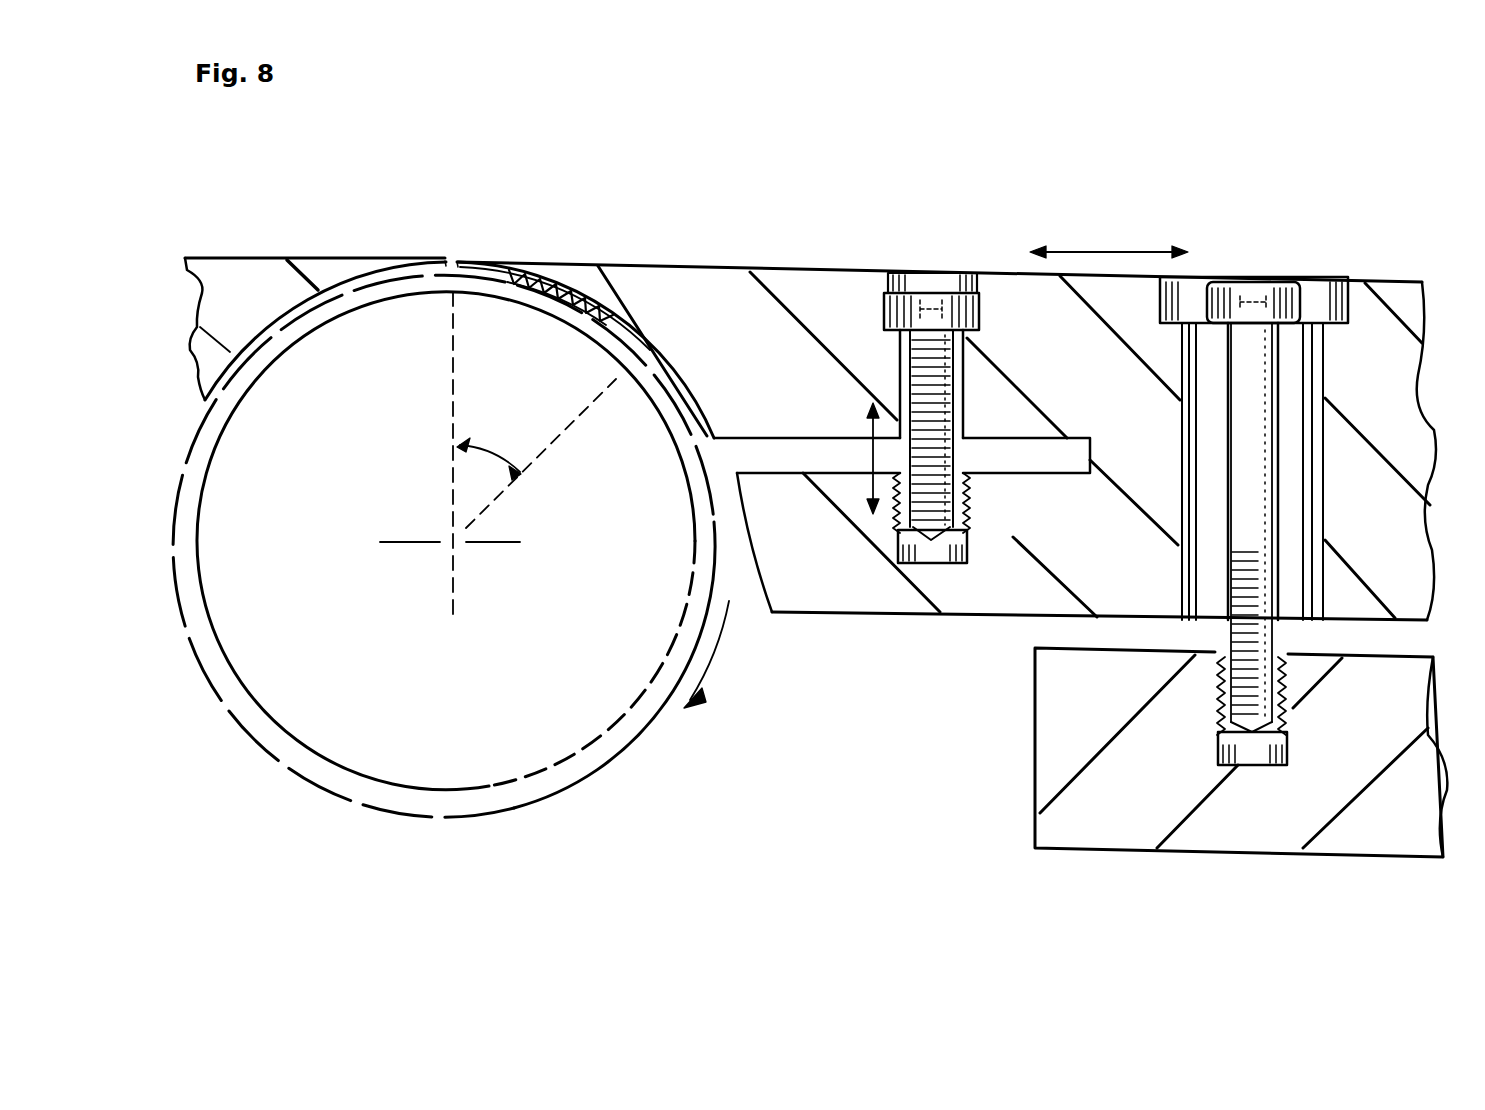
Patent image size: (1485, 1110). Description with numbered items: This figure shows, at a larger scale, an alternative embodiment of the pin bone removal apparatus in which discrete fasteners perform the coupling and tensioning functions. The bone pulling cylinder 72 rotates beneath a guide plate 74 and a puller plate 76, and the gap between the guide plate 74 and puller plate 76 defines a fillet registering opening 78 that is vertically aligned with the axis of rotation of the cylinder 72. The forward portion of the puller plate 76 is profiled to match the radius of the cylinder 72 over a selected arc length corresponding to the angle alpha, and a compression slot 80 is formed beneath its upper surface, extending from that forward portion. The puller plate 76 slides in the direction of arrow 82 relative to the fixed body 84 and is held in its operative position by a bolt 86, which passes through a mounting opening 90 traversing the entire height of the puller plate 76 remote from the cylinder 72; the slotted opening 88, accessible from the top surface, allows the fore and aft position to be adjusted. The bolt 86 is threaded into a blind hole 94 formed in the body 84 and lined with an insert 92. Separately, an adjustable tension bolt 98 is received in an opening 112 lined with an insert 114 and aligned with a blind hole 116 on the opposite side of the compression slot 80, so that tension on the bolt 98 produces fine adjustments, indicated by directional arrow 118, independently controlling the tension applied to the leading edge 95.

The bone pulling cylinder 72 is at (627, 757).
The guide plate 74 is at (302, 257).
The puller plate 76 is at (710, 267).
The fillet registering opening 78 is at (447, 248).
The compression slot 80 is at (788, 437).
The arrow 82 is at (1117, 252).
The fixed body 84 is at (1225, 852).
The bolt 86 is at (1278, 648).
The slotted opening 88 is at (1325, 280).
The mounting opening 90 is at (1320, 503).
The insert 92 is at (1217, 712).
The blind hole 94 is at (1287, 752).
The leading edge 95 is at (457, 258).
The bolt 98 is at (948, 292).
The opening 112 is at (900, 352).
The insert 114 is at (970, 497).
The blind hole 116 is at (938, 552).
The directional arrow 118 is at (870, 462).